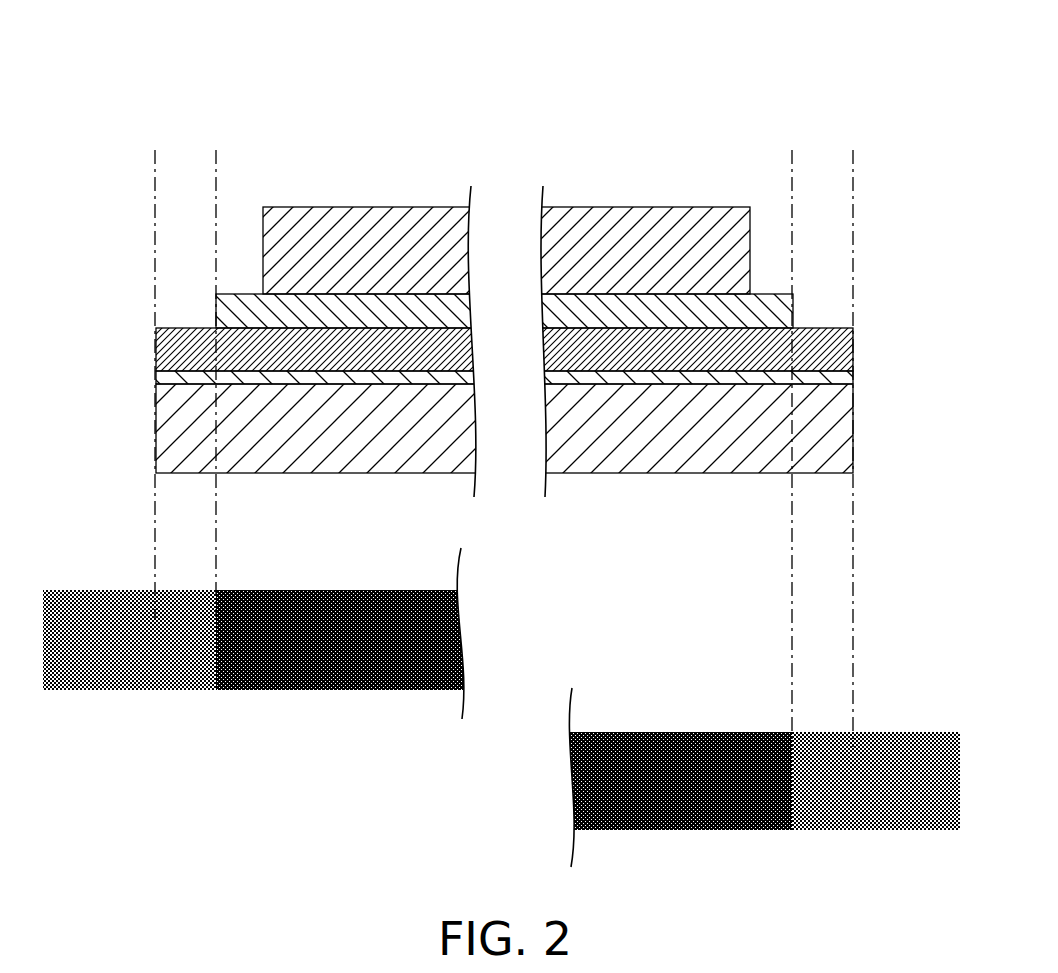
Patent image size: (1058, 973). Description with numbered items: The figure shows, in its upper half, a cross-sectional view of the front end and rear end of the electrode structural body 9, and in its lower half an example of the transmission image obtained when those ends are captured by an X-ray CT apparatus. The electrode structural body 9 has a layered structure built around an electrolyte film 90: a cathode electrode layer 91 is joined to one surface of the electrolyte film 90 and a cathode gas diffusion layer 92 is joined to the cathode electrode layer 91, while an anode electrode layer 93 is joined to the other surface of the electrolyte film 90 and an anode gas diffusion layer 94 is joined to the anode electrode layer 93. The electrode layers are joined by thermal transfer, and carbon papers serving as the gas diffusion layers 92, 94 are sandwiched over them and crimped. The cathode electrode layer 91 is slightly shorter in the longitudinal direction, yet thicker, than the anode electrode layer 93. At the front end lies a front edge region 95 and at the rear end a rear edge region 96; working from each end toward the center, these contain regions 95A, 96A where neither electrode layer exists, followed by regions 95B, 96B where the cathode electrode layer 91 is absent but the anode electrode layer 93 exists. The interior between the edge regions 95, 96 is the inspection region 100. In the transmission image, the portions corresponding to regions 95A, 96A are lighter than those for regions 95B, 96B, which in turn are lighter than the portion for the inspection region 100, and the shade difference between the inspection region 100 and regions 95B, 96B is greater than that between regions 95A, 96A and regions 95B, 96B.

The electrode structural body 9 is at (279, 54).
The inspection region 100 is at (217, 147).
The front edge region 95 is at (85, 147).
The region in which neither electrode layer exists 95A is at (113, 272).
The region in which the cathode electrode layer does not exist 95B is at (191, 272).
The rear edge region 96 is at (923, 147).
The region in which neither electrode layer exists 96A is at (890, 272).
The region in which the cathode electrode layer does not exist 96B is at (817, 272).
The electrolyte film 90 is at (690, 353).
The cathode electrode layer 91 is at (628, 318).
The cathode gas diffusion layer 92 is at (568, 262).
The anode electrode layer 93 is at (755, 377).
The anode gas diffusion layer 94 is at (817, 433).